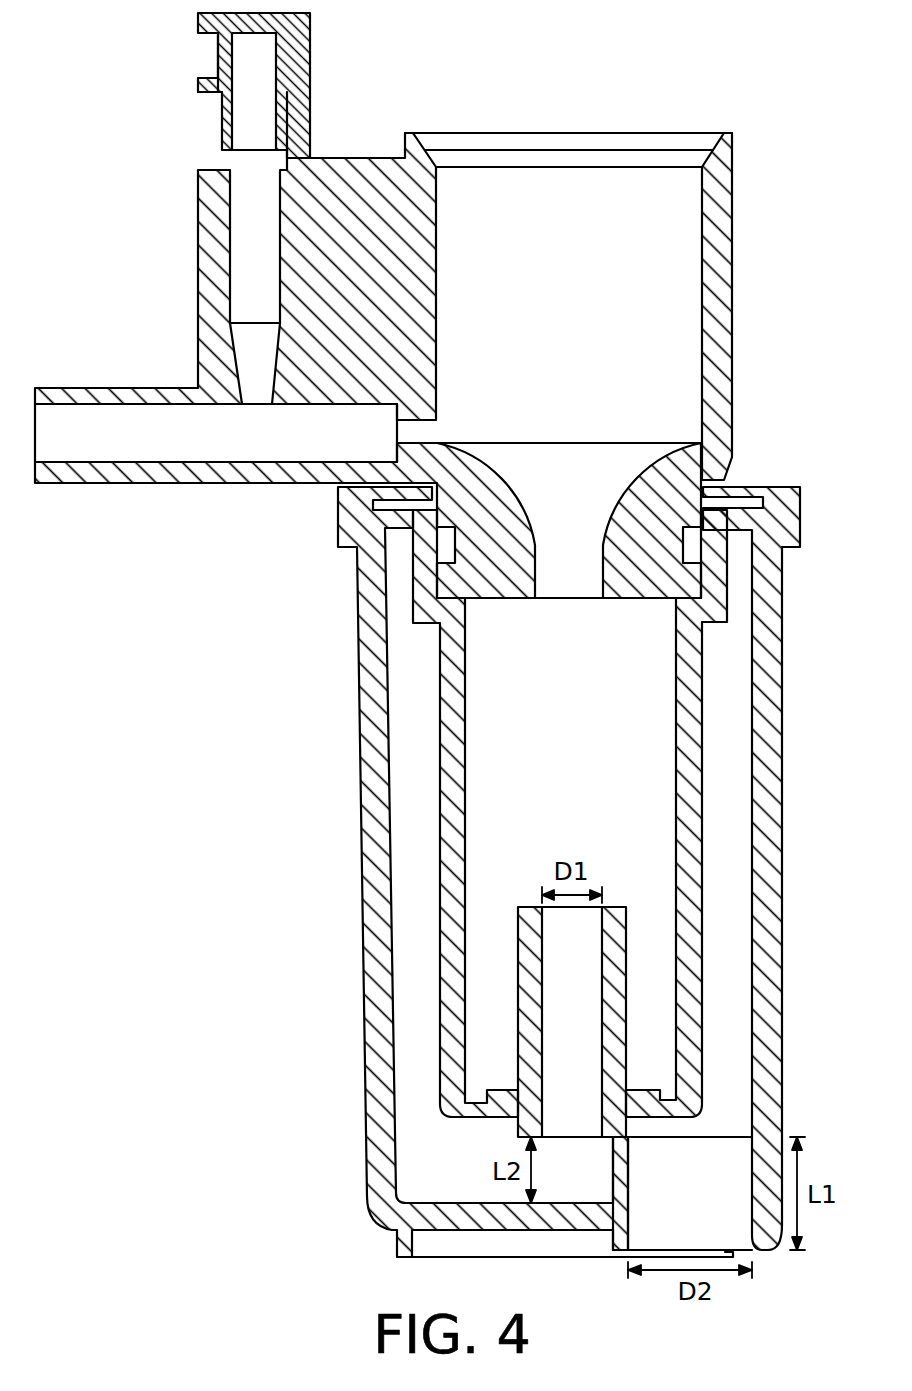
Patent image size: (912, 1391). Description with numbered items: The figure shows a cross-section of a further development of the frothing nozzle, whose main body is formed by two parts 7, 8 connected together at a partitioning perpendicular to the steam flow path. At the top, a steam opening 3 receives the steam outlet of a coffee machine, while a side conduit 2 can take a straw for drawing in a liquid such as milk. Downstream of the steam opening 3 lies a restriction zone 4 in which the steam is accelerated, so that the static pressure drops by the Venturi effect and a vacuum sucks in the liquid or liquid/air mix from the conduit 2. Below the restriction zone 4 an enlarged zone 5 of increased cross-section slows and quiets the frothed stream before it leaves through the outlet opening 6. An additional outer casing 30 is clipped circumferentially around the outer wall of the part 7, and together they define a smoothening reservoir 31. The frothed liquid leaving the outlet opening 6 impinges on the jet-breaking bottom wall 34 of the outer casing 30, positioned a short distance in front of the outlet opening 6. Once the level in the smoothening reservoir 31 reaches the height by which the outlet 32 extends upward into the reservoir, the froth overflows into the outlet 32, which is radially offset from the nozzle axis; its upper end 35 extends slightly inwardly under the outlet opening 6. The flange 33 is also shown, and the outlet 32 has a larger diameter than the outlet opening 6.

The conduit 2 is at (100, 418).
The steam opening 3 is at (597, 175).
The restriction zone 4 is at (570, 598).
The enlarged zone 5 is at (647, 727).
The outlet opening 6 is at (578, 1130).
The part of main body 7 is at (437, 697).
The part of main body 8 is at (733, 265).
The outer casing 30 is at (360, 808).
The smoothening reservoir 31 is at (408, 1165).
The outlet 32 is at (742, 1228).
The flange 33 is at (757, 507).
The bottom wall 34 is at (463, 1200).
The upper end of outlet 35 is at (630, 1162).